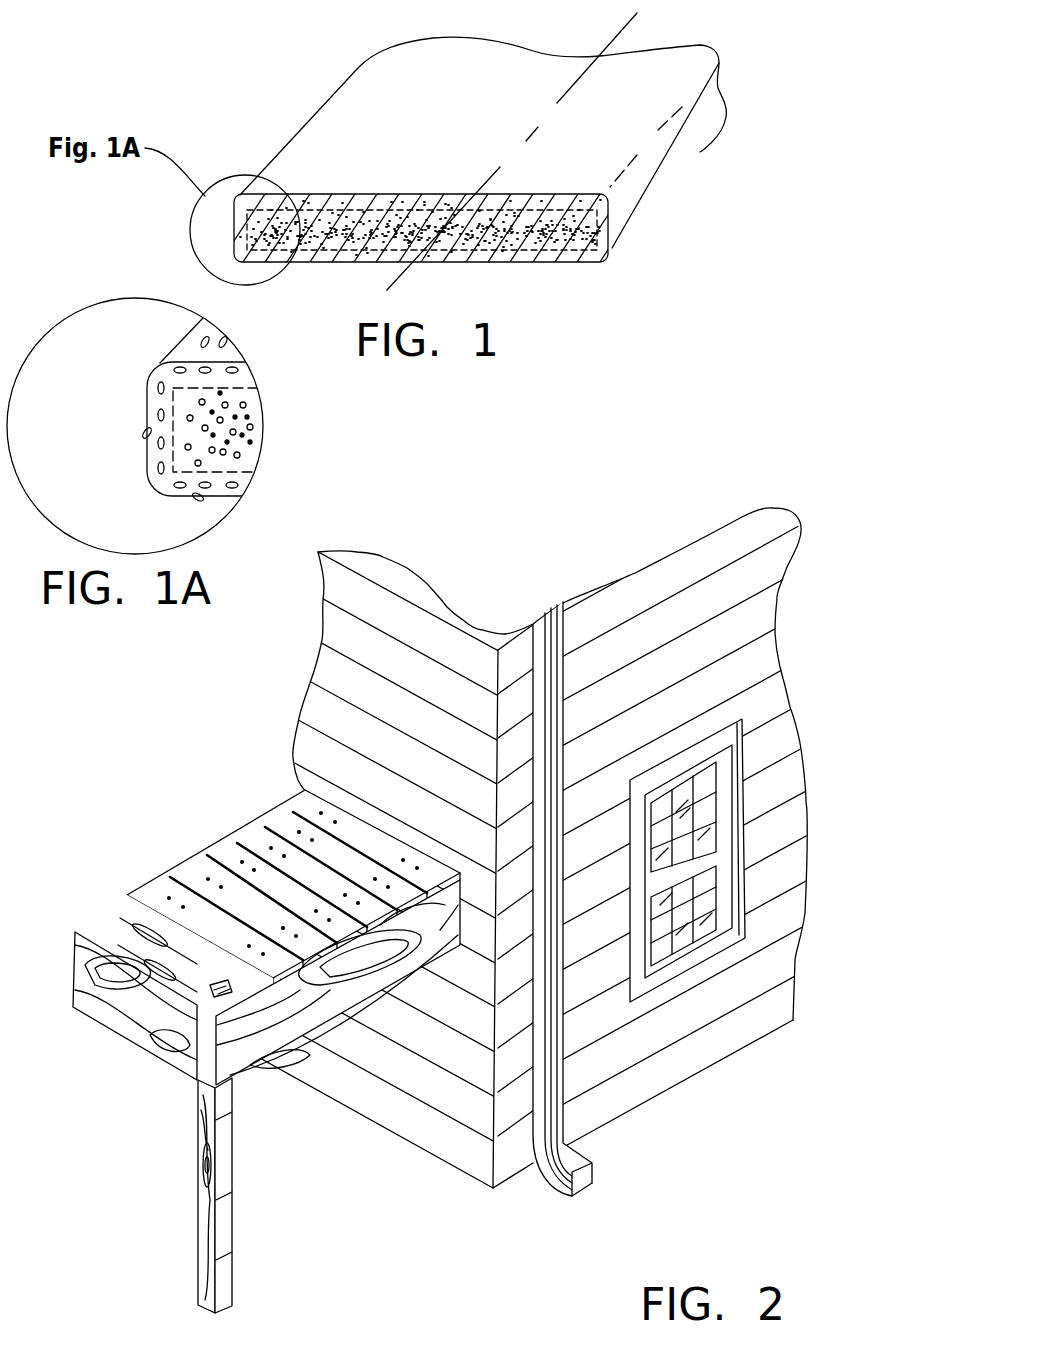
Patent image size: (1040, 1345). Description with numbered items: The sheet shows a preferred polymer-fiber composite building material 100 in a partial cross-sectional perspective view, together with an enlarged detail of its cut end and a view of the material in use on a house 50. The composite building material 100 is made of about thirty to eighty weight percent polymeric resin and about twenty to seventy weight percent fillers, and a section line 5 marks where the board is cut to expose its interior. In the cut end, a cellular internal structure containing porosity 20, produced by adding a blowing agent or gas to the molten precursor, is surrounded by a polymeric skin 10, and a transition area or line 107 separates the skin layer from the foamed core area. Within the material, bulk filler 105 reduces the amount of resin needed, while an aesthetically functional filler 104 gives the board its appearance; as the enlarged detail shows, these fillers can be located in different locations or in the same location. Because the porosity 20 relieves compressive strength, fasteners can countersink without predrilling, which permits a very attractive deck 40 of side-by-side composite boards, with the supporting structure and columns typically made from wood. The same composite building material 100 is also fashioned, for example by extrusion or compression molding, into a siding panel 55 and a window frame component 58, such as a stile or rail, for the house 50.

In FIG. 1, the section line 5- 5 is at (637, 16).
In FIG. 1, the polymeric skin 10 is at (608, 232).
In FIG. 1, the porosity 20 is at (530, 236).
In FIG. 1, the polymer-fiber composite building material 100 is at (275, 160).
In FIG. 1A, the polymer-fiber composite building material 100 is at (155, 372).
In FIG. 2, the polymer-fiber composite building material 100 is at (188, 868).
In FIG. 1A, the aesthetically functional filler 104 is at (203, 343).
In FIG. 1A, the bulk filler 105 is at (205, 427).
In FIG. 1A, the transition area or line 107 is at (172, 400).
In FIG. 2, the deck 40 is at (150, 1063).
In FIG. 2, the house 50 is at (412, 1163).
In FIG. 2, the siding panel 55 is at (372, 1098).
In FIG. 2, the window frame component 58 is at (740, 847).